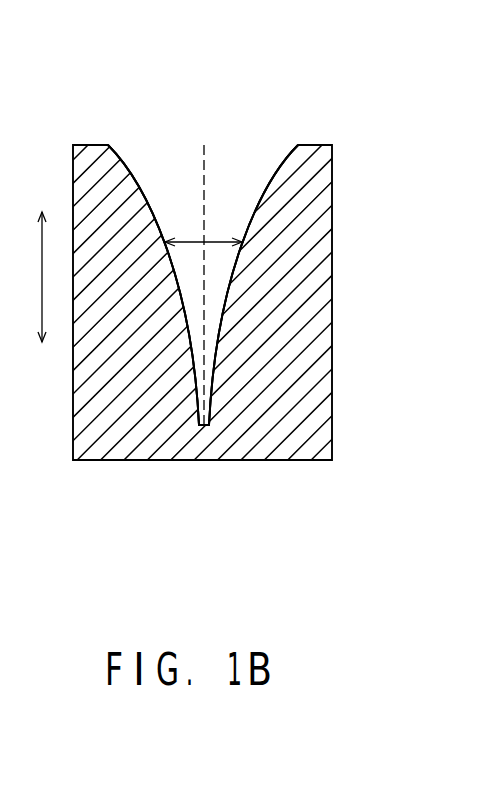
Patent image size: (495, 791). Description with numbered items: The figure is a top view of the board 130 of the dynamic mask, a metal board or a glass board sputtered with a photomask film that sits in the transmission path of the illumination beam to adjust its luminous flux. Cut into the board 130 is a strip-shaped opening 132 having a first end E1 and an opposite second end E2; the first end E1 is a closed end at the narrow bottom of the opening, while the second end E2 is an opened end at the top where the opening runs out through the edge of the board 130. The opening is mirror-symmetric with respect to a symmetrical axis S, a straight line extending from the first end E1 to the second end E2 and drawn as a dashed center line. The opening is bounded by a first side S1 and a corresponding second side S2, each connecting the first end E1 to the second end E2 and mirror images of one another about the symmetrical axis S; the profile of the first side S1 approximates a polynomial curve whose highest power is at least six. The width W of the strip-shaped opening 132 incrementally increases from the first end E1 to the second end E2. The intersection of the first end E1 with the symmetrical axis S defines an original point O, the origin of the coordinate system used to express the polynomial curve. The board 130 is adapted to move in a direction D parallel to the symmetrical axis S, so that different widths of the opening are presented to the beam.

The board 130 is at (433, 523).
The strip-shaped opening 132 is at (253, 194).
The first side S1 is at (131, 173).
The second side S2 is at (222, 270).
The symmetrical axis S is at (203, 174).
The first end E1 is at (202, 430).
The second end E2 is at (158, 148).
The original point O is at (206, 431).
The width W is at (216, 244).
The direction D is at (28, 277).